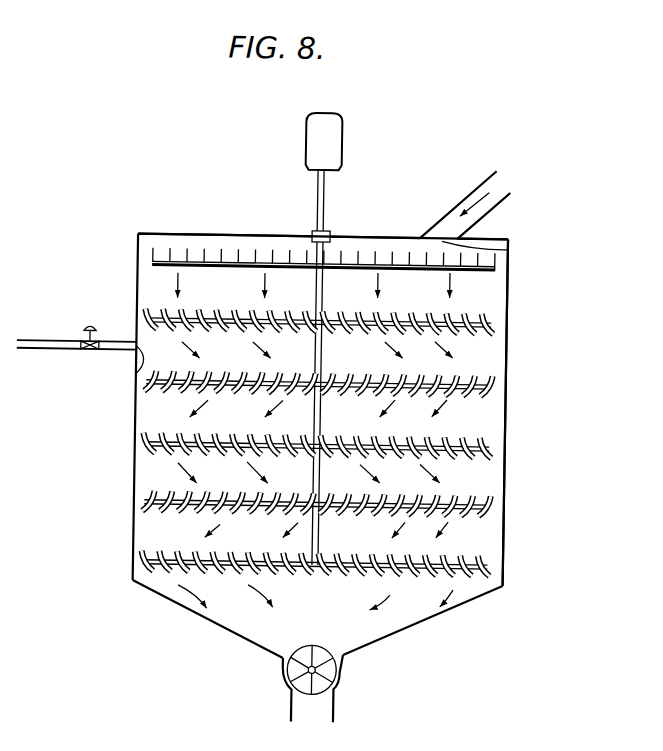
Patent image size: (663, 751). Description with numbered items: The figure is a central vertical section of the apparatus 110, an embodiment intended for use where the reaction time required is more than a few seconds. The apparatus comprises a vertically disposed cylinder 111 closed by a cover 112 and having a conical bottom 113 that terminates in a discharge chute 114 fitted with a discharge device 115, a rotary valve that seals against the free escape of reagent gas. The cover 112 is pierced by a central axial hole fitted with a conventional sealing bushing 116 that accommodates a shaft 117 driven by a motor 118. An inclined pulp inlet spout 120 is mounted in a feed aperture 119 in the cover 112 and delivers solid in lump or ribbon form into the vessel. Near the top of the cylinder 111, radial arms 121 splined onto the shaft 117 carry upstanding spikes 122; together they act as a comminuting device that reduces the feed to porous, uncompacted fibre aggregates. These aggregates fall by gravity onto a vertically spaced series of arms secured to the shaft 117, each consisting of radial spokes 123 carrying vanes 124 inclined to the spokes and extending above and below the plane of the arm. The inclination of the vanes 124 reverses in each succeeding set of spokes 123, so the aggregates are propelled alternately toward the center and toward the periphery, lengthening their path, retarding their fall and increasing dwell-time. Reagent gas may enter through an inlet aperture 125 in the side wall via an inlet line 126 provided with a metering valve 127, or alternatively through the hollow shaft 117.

The apparatus 110 is at (507, 364).
The cylinder 111 is at (506, 405).
The cover 112 is at (260, 236).
The conical bottom 113 is at (414, 627).
The discharge chute 114 is at (334, 713).
The discharge device 115 is at (341, 675).
The sealing bushing 116 is at (327, 231).
The shaft 117 is at (321, 190).
The motor 118 is at (302, 139).
The feed aperture 119 is at (506, 246).
The pulp inlet spout 120 is at (500, 190).
The radial arms 121 is at (156, 266).
The spikes 122 is at (165, 252).
The radial spokes 123 is at (458, 330).
The vanes 124 is at (458, 312).
The inlet aperture 125 is at (133, 376).
The inlet line 126 is at (55, 353).
The valve 127 is at (89, 331).